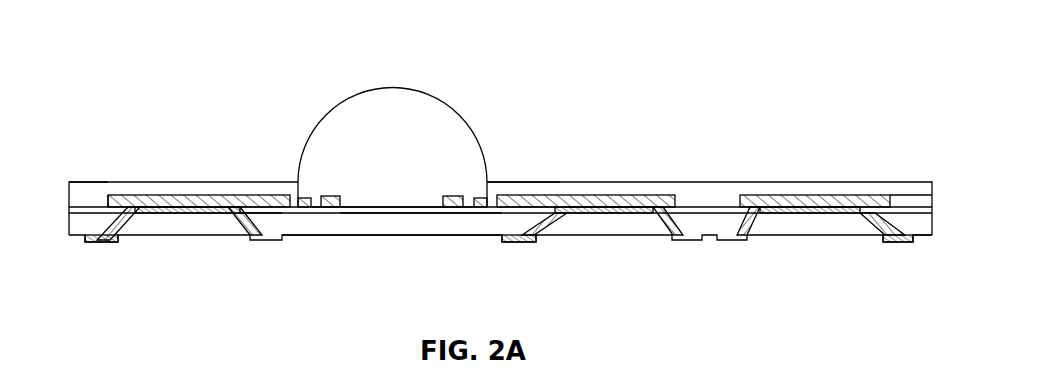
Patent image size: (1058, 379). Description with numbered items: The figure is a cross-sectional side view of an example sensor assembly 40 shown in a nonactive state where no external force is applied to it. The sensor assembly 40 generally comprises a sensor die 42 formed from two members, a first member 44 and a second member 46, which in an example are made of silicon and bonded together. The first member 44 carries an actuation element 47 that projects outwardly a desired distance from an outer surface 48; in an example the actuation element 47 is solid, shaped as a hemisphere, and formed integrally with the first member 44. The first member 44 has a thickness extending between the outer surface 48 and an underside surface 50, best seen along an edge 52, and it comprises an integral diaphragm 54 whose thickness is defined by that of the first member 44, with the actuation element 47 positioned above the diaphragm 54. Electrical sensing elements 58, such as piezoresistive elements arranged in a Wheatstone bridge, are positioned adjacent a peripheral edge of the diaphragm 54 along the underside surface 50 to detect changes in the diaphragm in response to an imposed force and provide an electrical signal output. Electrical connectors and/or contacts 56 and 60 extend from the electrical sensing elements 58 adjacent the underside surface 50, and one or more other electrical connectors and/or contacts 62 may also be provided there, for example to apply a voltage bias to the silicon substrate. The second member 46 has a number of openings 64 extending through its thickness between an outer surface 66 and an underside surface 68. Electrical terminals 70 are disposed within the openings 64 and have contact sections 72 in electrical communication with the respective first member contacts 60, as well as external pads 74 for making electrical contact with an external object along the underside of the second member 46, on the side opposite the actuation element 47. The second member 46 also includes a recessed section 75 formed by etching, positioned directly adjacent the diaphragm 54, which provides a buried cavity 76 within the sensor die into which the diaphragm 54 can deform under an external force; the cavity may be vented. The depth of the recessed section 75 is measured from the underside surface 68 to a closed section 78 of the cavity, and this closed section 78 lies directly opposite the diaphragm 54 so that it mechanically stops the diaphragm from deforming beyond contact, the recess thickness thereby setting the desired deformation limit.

The sensor assembly 40 is at (558, 78).
The sensor die 42 is at (903, 183).
The first member 44 is at (920, 195).
The second member 46 is at (930, 222).
The actuation element 47 is at (447, 117).
The outer surface 48 is at (506, 181).
The underside surface 50 is at (70, 222).
The edge 52 is at (62, 189).
The diaphragm 54 is at (385, 190).
The electrical connectors and/or contacts 56 is at (330, 188).
The electrical sensing elements 58 is at (303, 188).
The electrical connectors and/or contacts 60 is at (186, 200).
The electrical connectors and/or contacts 62 is at (820, 200).
The openings 64 is at (115, 240).
The outer surface 66 is at (917, 248).
The underside surface 68 is at (96, 200).
The electrical terminals 70 is at (130, 236).
The contact sections 72 is at (200, 216).
The external pads 74 is at (100, 246).
The recessed section 75 is at (305, 233).
The buried cavity 76 is at (420, 216).
The closed section 78 is at (396, 238).